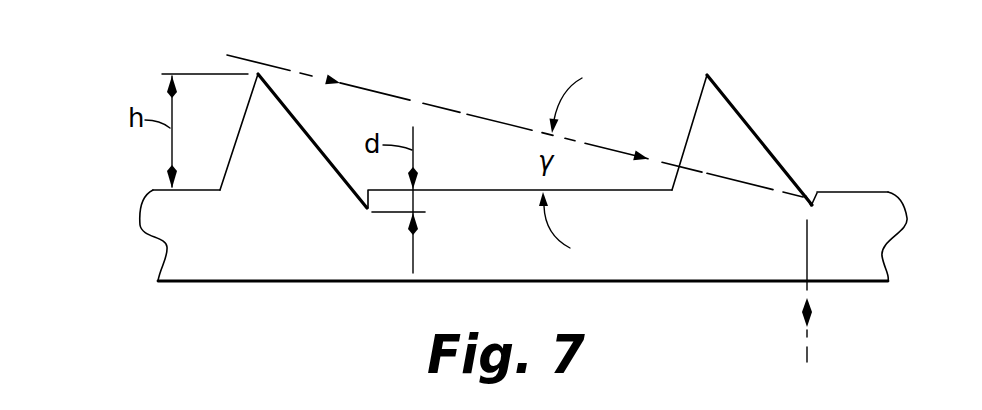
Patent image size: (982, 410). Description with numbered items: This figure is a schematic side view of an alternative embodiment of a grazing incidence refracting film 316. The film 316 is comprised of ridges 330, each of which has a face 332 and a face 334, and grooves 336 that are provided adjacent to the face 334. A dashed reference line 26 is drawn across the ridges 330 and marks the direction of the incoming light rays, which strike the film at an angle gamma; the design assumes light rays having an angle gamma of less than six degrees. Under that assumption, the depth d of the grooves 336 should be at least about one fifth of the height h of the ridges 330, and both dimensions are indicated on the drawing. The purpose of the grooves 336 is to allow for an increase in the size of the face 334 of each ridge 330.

The reference line 26 is at (388, 92).
The film 316 is at (133, 194).
The ridges 330 is at (763, 116).
The face 332 is at (701, 92).
The face 334 is at (745, 120).
The grooves 336 is at (807, 196).